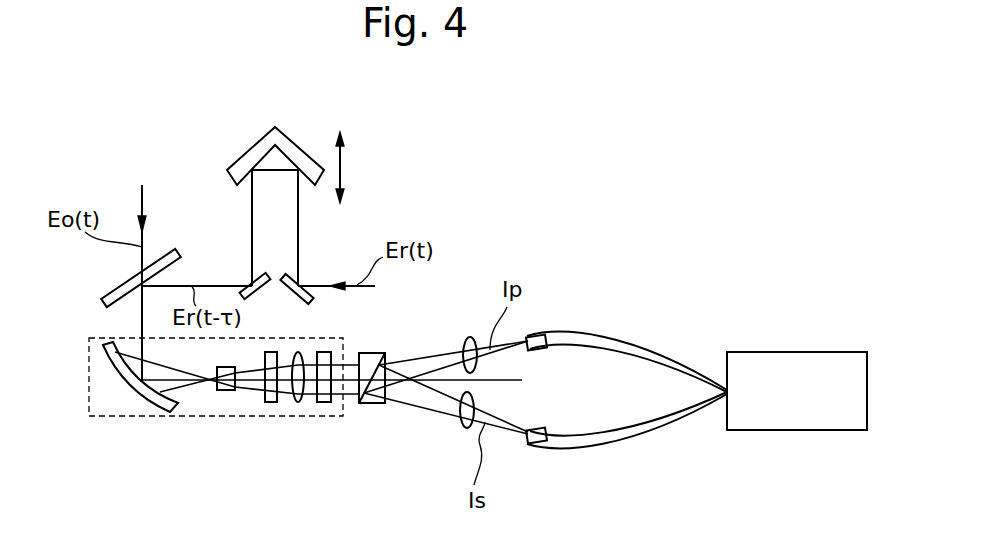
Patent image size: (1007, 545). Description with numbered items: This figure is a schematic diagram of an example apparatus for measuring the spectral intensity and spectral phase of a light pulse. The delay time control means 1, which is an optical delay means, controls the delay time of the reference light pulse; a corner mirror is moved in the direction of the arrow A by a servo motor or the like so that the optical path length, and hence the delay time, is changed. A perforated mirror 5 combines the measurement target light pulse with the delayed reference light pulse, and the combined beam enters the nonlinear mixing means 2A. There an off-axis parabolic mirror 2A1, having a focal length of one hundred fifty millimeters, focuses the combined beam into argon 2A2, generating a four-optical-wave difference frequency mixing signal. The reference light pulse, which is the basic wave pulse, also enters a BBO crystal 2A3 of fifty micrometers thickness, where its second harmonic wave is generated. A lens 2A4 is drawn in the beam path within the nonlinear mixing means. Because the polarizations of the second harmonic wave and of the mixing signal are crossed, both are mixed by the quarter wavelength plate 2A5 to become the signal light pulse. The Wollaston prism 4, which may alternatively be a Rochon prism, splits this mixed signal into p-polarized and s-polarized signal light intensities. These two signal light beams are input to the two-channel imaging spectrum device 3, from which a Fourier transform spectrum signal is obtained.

The delay time control means 1 is at (300, 150).
The arrow A is at (342, 177).
The perforated mirror 5 is at (113, 283).
The nonlinear mixing means 2A is at (302, 408).
The off-axis parabolic mirror 2A1 is at (130, 382).
The argon 2A2 is at (226, 392).
The BBO crystal 2A3 is at (270, 403).
The lens 2A4 is at (298, 352).
The quarter wavelength plate 2A5 is at (323, 403).
The Wollaston prism 4 is at (372, 404).
The two-channel imaging spectrum device 3 is at (798, 352).